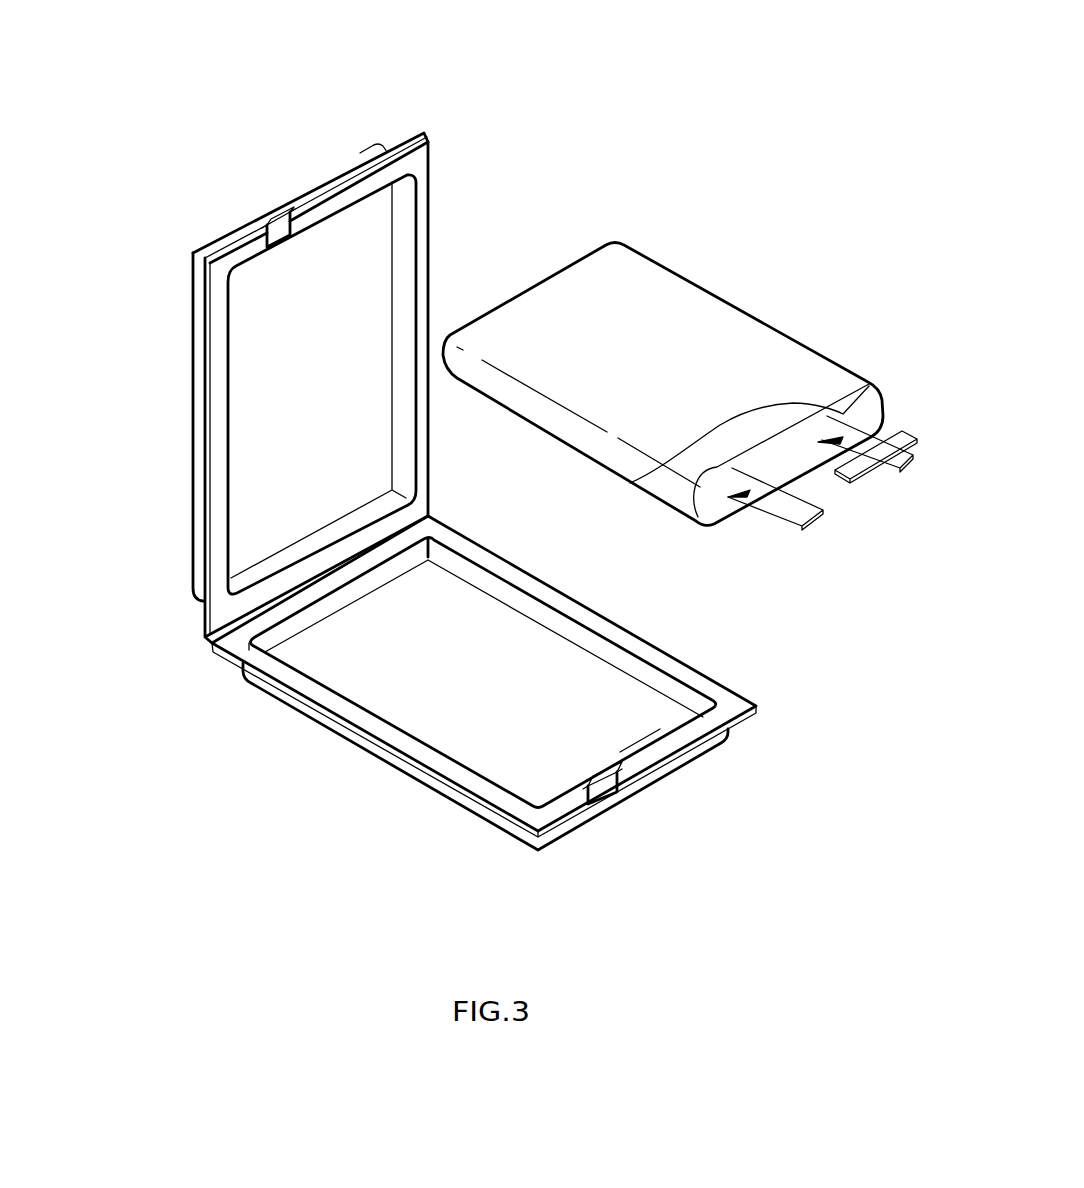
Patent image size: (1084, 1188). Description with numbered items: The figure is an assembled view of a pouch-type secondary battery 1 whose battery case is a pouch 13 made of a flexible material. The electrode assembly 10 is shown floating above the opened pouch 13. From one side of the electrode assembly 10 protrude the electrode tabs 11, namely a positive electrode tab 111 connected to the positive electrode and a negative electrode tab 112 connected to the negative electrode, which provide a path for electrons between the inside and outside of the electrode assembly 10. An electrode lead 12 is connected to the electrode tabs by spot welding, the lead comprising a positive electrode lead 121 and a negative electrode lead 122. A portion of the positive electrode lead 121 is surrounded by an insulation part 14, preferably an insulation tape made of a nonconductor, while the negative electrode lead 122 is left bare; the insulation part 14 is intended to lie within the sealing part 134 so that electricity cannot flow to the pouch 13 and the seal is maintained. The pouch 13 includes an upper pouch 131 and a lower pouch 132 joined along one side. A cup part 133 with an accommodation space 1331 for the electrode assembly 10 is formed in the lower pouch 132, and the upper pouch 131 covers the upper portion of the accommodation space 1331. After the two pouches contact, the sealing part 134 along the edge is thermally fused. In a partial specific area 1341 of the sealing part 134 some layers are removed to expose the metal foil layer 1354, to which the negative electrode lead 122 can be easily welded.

The secondary battery 1 is at (581, 122).
The electrode assembly 10 is at (755, 271).
The electrode tabs 11 is at (541, 485).
The positive electrode tab 111 is at (630, 483).
The negative electrode tab 112 is at (698, 475).
The electrode lead 12 is at (947, 537).
The positive electrode lead 121 is at (903, 460).
The negative electrode lead 122 is at (807, 513).
The insulation part 14 is at (888, 440).
The pouch 13 is at (110, 368).
The upper pouch 131 is at (197, 368).
The lower pouch 132 is at (238, 647).
The cup part 133 is at (374, 750).
The sealing part 134 is at (723, 710).
The accommodation space 1331 is at (634, 745).
The partial specific area 1341 is at (284, 248).
The metal foil layer 1354 is at (271, 221).